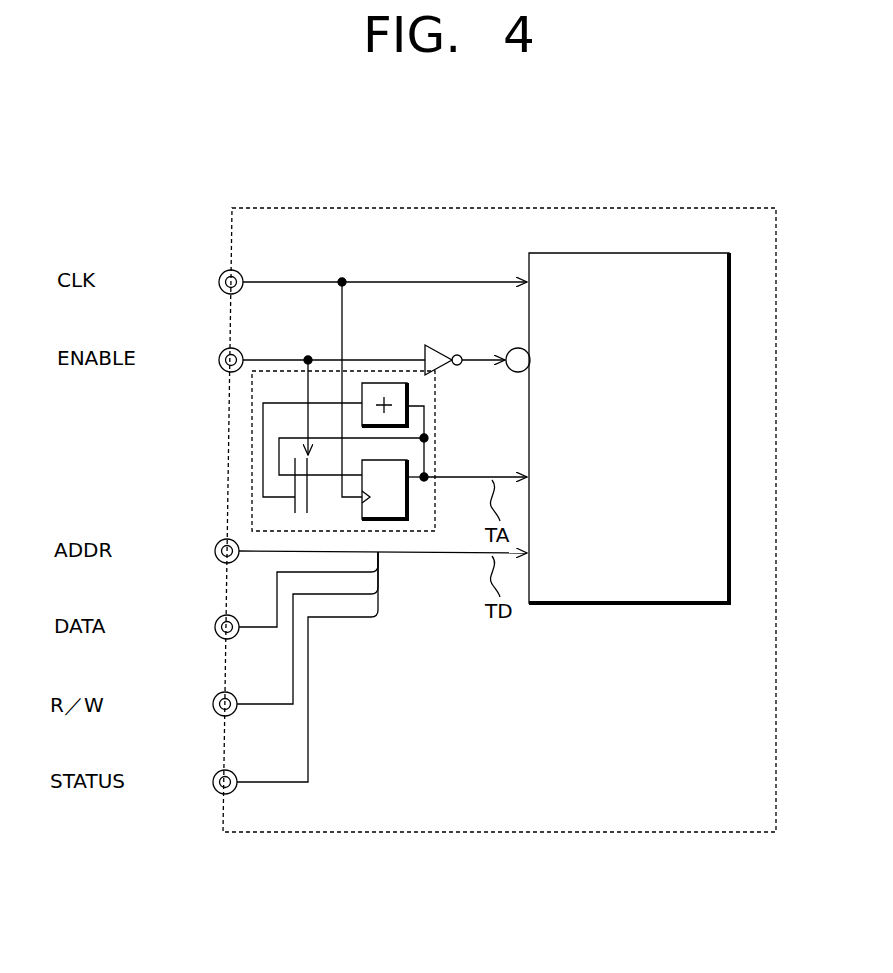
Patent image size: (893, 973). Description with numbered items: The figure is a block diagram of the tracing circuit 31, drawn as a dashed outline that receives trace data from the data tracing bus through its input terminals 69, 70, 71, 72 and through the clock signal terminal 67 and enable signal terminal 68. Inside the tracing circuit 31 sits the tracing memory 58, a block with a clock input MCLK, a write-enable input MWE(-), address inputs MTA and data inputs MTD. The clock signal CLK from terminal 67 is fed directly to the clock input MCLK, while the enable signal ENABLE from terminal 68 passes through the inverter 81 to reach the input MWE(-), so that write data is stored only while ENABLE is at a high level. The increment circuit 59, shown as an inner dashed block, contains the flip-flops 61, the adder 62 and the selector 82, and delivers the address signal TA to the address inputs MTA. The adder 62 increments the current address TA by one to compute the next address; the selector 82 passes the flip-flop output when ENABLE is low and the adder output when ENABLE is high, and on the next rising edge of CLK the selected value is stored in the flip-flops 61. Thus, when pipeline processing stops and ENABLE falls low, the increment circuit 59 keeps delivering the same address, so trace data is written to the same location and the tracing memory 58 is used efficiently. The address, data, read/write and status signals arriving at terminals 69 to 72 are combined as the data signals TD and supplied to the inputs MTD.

The tracing circuit 31 is at (515, 203).
The tracing memory 58 is at (677, 253).
The increment circuit 59 is at (254, 432).
The flip-flop 61 is at (408, 500).
The adder 62 is at (407, 392).
The clock signal output terminal 67 is at (219, 280).
The enable signal output terminal 68 is at (219, 358).
The input terminal 69 is at (215, 549).
The input terminal 70 is at (215, 625).
The input terminal 71 is at (213, 702).
The input terminal 72 is at (213, 780).
The inverter 81 is at (440, 345).
The selector 82 is at (295, 508).